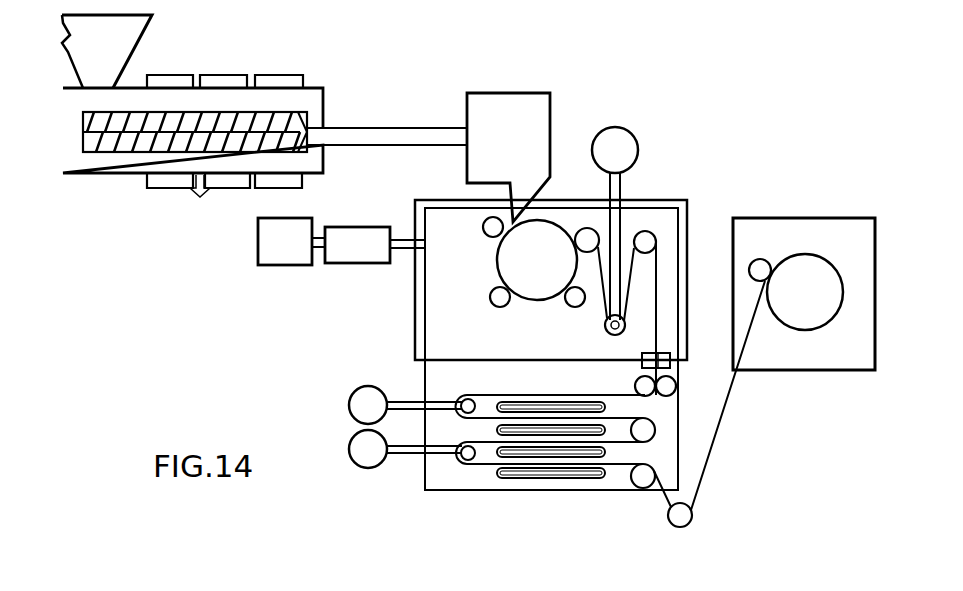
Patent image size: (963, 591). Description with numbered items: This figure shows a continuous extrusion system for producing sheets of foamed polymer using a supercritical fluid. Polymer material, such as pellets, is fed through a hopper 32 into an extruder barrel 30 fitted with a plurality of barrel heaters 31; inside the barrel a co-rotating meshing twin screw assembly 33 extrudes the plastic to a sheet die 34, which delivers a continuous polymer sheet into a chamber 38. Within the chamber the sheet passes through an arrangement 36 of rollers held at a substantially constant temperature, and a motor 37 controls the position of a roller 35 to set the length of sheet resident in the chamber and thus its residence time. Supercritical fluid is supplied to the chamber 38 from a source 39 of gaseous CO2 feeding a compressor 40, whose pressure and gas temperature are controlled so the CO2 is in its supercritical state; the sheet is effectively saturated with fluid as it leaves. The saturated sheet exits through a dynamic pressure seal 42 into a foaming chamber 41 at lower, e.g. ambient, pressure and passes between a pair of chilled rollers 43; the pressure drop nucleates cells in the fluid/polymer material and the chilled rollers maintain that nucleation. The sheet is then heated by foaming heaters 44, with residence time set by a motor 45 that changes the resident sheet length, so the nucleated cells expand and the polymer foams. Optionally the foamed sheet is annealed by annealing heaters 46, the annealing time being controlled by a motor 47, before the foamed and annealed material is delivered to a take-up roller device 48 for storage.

The extruder barrel 30 is at (112, 167).
The barrel heaters 31 is at (258, 182).
The hopper 32 is at (149, 31).
The co-rotating meshing twin screw assembly 33 is at (158, 123).
The sheet die 34 is at (553, 113).
The roller 35 is at (607, 332).
The arrangement of rollers 36 is at (543, 325).
The motor 37 is at (638, 153).
The chamber 38 is at (413, 291).
The source of supercritical fluid 39 is at (282, 267).
The compressor 40 is at (365, 223).
The foaming chamber 41 is at (422, 480).
The dynamic pressure seal 42 is at (663, 357).
The chilled rollers 43 is at (677, 385).
The foaming heaters 44 is at (565, 430).
The motor 45 is at (350, 395).
The annealing heaters 46 is at (555, 450).
The motor 47 is at (350, 447).
The take-up roller device 48 is at (758, 218).